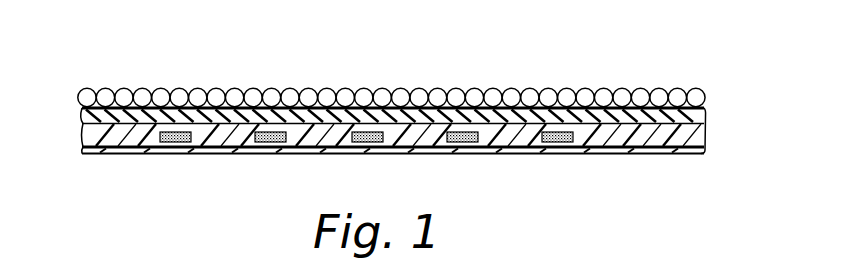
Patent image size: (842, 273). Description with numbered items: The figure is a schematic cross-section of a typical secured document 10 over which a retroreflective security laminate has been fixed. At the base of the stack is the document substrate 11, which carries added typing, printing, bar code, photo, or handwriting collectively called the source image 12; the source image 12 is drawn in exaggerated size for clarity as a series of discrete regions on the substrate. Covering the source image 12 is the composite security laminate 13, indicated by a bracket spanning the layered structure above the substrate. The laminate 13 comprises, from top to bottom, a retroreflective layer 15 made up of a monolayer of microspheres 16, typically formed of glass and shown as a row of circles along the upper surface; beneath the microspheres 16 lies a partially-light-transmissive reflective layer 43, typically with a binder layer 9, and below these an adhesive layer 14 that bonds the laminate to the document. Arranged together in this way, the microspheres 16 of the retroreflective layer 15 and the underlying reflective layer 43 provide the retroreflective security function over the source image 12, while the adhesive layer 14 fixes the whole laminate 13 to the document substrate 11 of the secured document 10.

The secured document 10 is at (257, 60).
The binder layer 9 is at (690, 117).
The document substrate 11 is at (407, 155).
The source image 12 is at (172, 141).
The security laminate 13 is at (71, 93).
The adhesive layer 14 is at (672, 133).
The retroreflective layer 15 is at (611, 80).
The microspheres 16 is at (400, 88).
The partially-light-transmissive reflective layer 43 is at (623, 110).